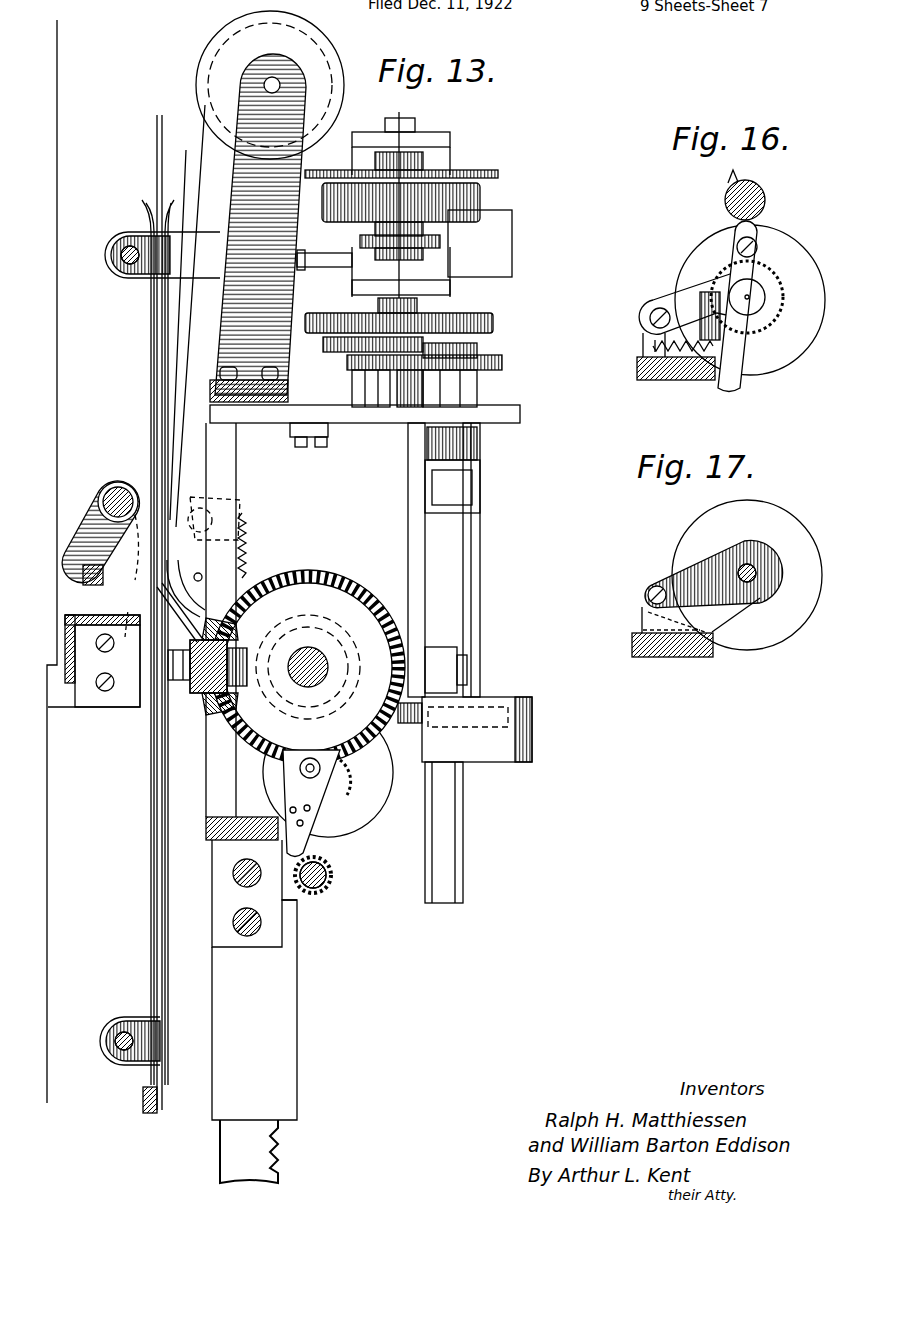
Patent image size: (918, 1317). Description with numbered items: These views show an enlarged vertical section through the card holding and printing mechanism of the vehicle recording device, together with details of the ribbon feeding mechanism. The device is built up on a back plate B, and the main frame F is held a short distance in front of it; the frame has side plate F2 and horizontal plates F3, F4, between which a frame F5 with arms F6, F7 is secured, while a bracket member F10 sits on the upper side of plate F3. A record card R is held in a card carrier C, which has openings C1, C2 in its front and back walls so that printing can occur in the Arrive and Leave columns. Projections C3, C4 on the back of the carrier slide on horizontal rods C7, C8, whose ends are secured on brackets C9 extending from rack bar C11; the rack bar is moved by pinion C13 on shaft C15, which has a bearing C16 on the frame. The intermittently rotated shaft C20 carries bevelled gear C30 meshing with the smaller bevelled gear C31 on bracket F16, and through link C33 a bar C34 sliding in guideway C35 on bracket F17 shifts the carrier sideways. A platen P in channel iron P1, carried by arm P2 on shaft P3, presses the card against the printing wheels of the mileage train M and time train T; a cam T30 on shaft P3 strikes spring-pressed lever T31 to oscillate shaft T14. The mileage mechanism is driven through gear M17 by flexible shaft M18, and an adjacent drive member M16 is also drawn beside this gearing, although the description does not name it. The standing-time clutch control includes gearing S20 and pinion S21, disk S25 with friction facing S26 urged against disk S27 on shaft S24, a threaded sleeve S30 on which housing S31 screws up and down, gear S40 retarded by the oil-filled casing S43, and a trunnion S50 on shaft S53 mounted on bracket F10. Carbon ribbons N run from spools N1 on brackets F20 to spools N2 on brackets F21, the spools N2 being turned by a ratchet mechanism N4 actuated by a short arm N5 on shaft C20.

In FIG. 13, the back plate B is at (59, 76).
In FIG. 13, the record card R is at (155, 128).
In FIG. 13, the card carrier C is at (143, 207).
In FIG. 13, the front wall opening of the card carrier C1 is at (145, 359).
In FIG. 13, the back wall opening of the card carrier C2 is at (155, 389).
In FIG. 13, the carrier projection C3 is at (113, 240).
In FIG. 13, the carrier projection C4 is at (128, 1022).
In FIG. 13, the horizontal rod C7 is at (118, 273).
In FIG. 13, the horizontal rod C8 is at (108, 1055).
In FIG. 13, the bracket C9 is at (200, 265).
In FIG. 13, the rack bar C11 is at (257, 1145).
In FIG. 13, the pinion C13 is at (332, 880).
In FIG. 13, the shaft C15 is at (310, 890).
In FIG. 13, the shaft bearing C16 is at (310, 897).
In FIG. 13, the shaft C20 is at (327, 670).
In FIG. 16, the shaft C20 is at (763, 200).
In FIG. 13, the bevelled gear C30 is at (382, 552).
In FIG. 13, the smaller bevelled gear C31 is at (243, 630).
In FIG. 13, the link C33 is at (178, 695).
In FIG. 13, the bar C34 is at (230, 673).
In FIG. 13, the guideway C35 is at (227, 652).
In FIG. 13, the printing ribbon N is at (206, 140).
In FIG. 13, the ribbon spool N1 is at (240, 37).
In FIG. 13, the ribbon spool N2 is at (343, 820).
In FIG. 16, the ribbon spool N2 is at (703, 252).
In FIG. 17, the ribbon spool N2 is at (707, 528).
In FIG. 13, the ratchet mechanism N4 is at (349, 796).
In FIG. 16, the ratchet mechanism N4 is at (770, 262).
In FIG. 16, the short arm N5 is at (728, 178).
In FIG. 13, the main frame F is at (233, 843).
In FIG. 13, the side plate F2 is at (270, 1003).
In FIG. 13, the upper horizontal plate F3 is at (320, 382).
In FIG. 13, the lower horizontal plate F4 is at (254, 893).
In FIG. 16, the lower horizontal plate F4 is at (678, 373).
In FIG. 17, the lower horizontal plate F4 is at (675, 652).
In FIG. 13, the frame F5 is at (385, 415).
In FIG. 13, the arm of frame F5 F6 is at (273, 510).
In FIG. 13, the arm of frame F5 F7 is at (392, 570).
In FIG. 13, the bracket member F10 is at (440, 132).
In FIG. 13, the bracket F16 is at (247, 477).
In FIG. 13, the bracket F17 is at (210, 805).
In FIG. 13, the bracket F20 is at (303, 72).
In FIG. 16, the bracket F21 is at (657, 300).
In FIG. 17, the bracket F21 is at (642, 617).
In FIG. 13, the gearing S20 is at (478, 405).
In FIG. 13, the pinion S21 is at (505, 362).
In FIG. 13, the shaft S24 is at (457, 313).
In FIG. 13, the disk S25 is at (478, 346).
In FIG. 13, the friction facing S26 is at (430, 337).
In FIG. 13, the disk S27 is at (495, 318).
In FIG. 13, the externally threaded sleeve S30 is at (377, 263).
In FIG. 13, the housing S31 is at (480, 193).
In FIG. 13, the gear S40 is at (470, 170).
In FIG. 13, the casing S43 is at (498, 232).
In FIG. 13, the trunnion S50 is at (425, 250).
In FIG. 13, the shaft S53 is at (337, 248).
In FIG. 13, the mileage train M is at (187, 620).
In FIG. 13, the pinion M16 is at (418, 727).
In FIG. 13, the gear M17 is at (507, 715).
In FIG. 13, the flexible shaft M18 is at (448, 805).
In FIG. 13, the platen P is at (93, 587).
In FIG. 13, the channel iron P1 is at (95, 577).
In FIG. 13, the arm P2 is at (97, 493).
In FIG. 13, the platen shaft P3 is at (118, 493).
In FIG. 13, the time train T is at (165, 520).
In FIG. 13, the shaft T14 is at (163, 528).
In FIG. 13, the cam T30 is at (191, 463).
In FIG. 13, the spring-pressed lever T31 is at (94, 658).